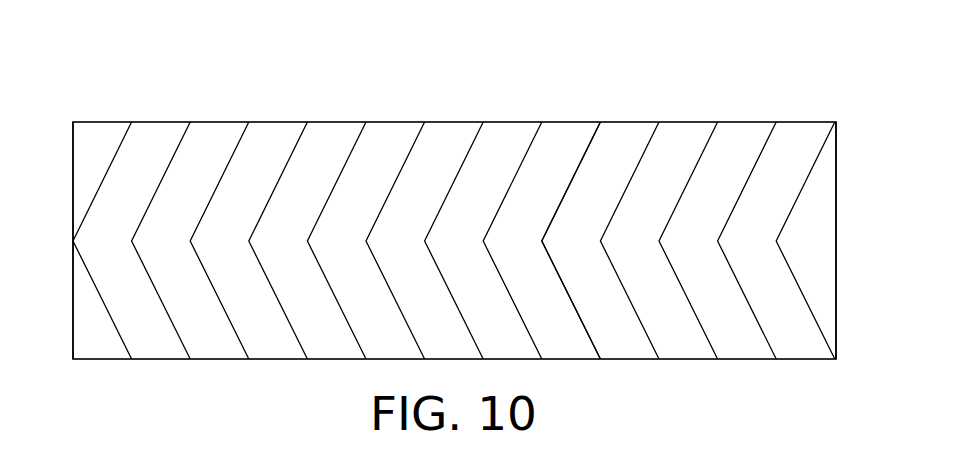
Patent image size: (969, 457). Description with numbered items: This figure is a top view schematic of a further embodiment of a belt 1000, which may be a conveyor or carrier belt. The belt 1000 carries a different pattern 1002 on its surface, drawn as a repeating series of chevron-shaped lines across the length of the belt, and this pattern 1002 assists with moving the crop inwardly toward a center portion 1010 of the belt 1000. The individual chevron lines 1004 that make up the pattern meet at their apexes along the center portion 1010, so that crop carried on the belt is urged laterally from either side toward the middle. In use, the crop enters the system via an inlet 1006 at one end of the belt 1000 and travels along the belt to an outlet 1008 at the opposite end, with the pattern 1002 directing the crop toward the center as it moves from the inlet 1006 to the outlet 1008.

The belt 1000 is at (469, 208).
The pattern 1002 is at (583, 122).
The chevron grooves 1004 is at (415, 142).
The inlet 1006 is at (866, 240).
The outlet 1008 is at (67, 286).
The center portion 1010 is at (578, 288).